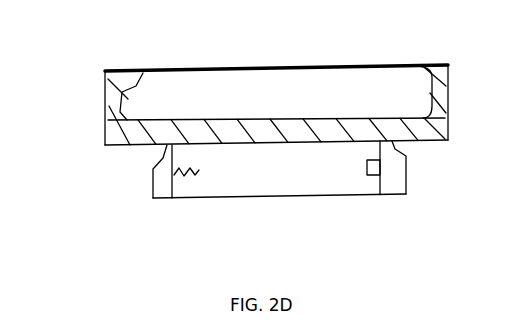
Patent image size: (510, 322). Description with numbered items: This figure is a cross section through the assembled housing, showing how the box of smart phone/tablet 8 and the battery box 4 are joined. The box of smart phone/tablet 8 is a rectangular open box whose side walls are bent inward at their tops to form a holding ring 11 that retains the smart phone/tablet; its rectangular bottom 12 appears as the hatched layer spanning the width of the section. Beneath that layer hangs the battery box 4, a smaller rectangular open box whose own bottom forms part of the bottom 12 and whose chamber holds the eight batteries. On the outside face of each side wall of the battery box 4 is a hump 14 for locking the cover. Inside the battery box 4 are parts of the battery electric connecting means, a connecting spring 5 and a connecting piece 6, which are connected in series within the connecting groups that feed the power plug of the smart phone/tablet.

The battery box 4 is at (273, 175).
The connecting spring 5 is at (195, 178).
The connecting piece 6 is at (368, 173).
The box of smart phone/tablet 8 is at (106, 112).
The holding ring 11 is at (132, 72).
The bottom 12 is at (255, 118).
The hump 14 is at (150, 171).